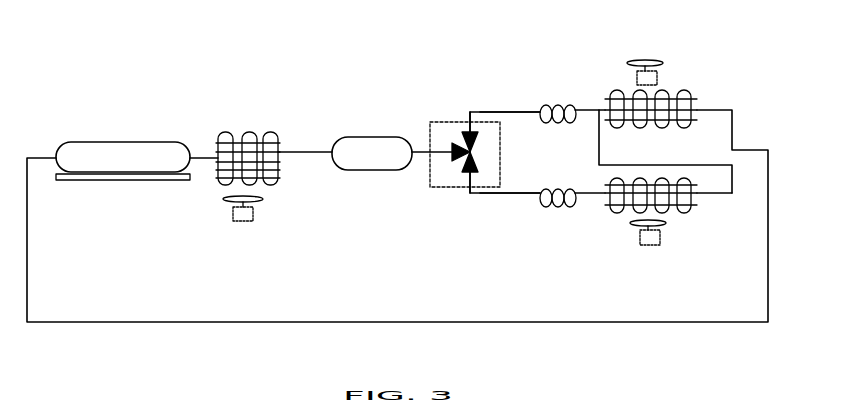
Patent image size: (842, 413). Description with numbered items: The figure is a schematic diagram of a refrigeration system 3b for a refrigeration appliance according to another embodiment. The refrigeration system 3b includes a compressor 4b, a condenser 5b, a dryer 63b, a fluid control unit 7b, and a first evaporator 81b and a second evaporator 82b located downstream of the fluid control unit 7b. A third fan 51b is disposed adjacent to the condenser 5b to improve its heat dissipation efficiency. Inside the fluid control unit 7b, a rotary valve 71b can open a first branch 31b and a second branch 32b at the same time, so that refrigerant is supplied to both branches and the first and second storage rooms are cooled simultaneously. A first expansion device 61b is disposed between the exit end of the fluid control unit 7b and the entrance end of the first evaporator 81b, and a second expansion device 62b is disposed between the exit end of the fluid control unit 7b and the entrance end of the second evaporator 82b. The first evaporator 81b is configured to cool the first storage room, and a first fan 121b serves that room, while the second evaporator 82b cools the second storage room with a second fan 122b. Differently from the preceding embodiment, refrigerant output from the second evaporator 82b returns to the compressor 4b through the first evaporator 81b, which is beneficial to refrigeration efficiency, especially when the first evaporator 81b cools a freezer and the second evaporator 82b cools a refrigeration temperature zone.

The refrigeration system 3b is at (296, 88).
The compressor 4b is at (128, 150).
The condenser 5b is at (250, 134).
The third fan 51b is at (257, 214).
The dryer 63b is at (362, 148).
The fluid control unit 7b is at (443, 118).
The rotary valve 71b is at (465, 158).
The first branch 31b is at (518, 108).
The second branch 32b is at (512, 196).
The first expansion device 61b is at (558, 108).
The second expansion device 62b is at (563, 190).
The first evaporator 81b is at (690, 92).
The second evaporator 82b is at (680, 213).
The first fan 121b is at (635, 55).
The second fan 122b is at (642, 240).